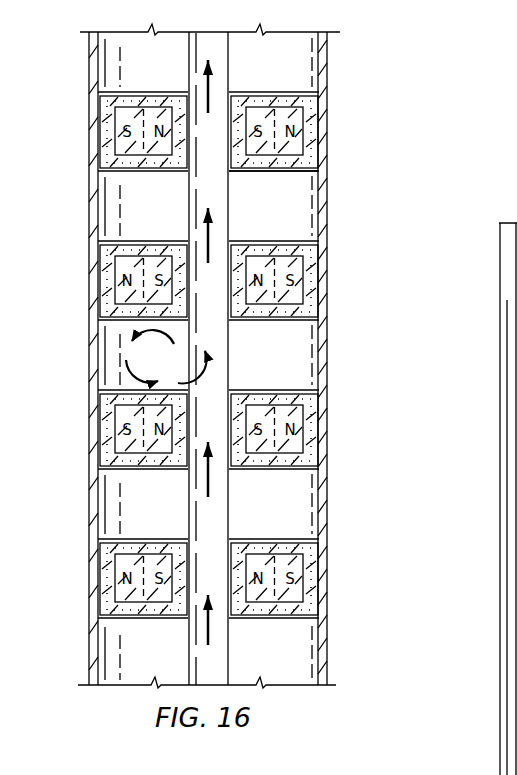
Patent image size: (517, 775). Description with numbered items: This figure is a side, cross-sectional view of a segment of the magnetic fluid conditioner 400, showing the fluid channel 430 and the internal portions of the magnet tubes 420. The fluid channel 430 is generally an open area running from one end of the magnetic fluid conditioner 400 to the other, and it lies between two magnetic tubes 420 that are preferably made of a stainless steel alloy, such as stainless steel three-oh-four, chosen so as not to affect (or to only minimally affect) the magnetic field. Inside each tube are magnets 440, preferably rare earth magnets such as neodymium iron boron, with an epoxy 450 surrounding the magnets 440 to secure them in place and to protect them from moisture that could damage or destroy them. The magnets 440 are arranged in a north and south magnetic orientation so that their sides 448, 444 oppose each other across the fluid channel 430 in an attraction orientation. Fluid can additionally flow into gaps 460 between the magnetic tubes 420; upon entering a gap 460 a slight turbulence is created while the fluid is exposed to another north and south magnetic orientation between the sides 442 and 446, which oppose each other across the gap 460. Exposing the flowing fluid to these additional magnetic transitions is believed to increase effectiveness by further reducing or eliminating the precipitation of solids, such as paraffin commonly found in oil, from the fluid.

The magnetic fluid conditioner 400 is at (353, 366).
The magnet tube 420 is at (98, 583).
The fluid channel 430 is at (215, 513).
The magnet 440 is at (298, 116).
The side 442 is at (283, 250).
The side 444 is at (157, 116).
The side 446 is at (287, 162).
The side 448 is at (247, 118).
The epoxy 450 is at (262, 613).
The gap 460 is at (110, 360).